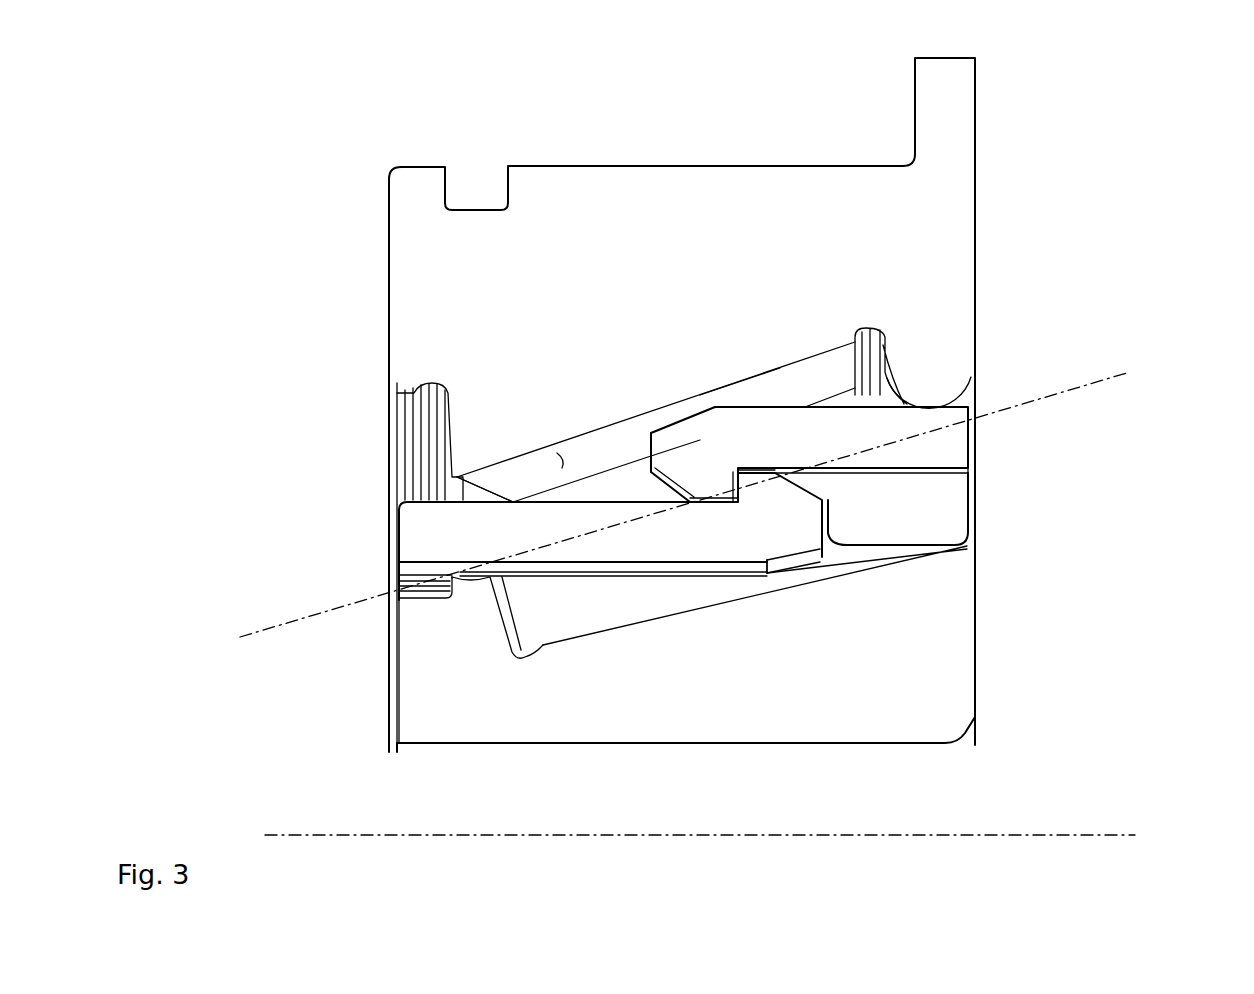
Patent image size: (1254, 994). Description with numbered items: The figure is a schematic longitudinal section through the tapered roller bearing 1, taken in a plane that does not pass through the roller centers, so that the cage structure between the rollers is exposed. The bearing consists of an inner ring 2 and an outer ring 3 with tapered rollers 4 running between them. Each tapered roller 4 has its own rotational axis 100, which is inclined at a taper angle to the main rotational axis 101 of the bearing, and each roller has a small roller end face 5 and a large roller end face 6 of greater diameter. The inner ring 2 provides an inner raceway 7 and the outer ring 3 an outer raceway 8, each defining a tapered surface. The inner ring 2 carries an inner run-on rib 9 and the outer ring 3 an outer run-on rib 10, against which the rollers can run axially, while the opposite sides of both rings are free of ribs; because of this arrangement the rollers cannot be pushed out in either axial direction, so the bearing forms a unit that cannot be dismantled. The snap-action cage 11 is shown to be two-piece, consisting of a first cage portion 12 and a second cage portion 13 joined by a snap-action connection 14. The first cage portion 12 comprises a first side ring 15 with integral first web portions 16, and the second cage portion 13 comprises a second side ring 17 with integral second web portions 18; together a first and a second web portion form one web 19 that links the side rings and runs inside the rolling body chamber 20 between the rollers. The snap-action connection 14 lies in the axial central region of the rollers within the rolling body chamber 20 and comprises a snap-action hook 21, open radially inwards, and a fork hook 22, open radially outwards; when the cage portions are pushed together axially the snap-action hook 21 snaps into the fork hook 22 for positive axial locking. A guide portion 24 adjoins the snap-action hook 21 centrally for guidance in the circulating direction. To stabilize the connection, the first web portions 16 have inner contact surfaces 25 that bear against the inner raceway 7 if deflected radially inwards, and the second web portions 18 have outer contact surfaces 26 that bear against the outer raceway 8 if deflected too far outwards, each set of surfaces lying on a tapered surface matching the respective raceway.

The tapered roller bearing 1 is at (223, 125).
The inner ring 2 is at (686, 676).
The outer ring 3 is at (682, 405).
The tapered roller 4 is at (509, 601).
The small roller end face 5 is at (510, 633).
The large roller end face 6 is at (885, 372).
The inner raceway 7 is at (613, 620).
The outer raceway 8 is at (557, 453).
The inner run-on rib 9 is at (447, 602).
The outer run-on rib 10 is at (929, 379).
The snap-action cage 11 is at (1047, 447).
The first cage portion 12 is at (398, 552).
The second cage portion 13 is at (966, 461).
The snap-action connection 14 is at (722, 366).
The first side ring 15 is at (583, 551).
The first web portions 16 is at (610, 553).
The second side ring 17 is at (853, 456).
The second web portions 18 is at (809, 454).
The web 19 is at (622, 392).
The rolling body chamber 20 is at (612, 452).
The snap-action hook 21 is at (728, 485).
The fork hook 22 is at (743, 487).
The guide portion 24 is at (812, 485).
The inner contact surfaces 25 is at (828, 585).
The outer contact surfaces 26 is at (676, 418).
The rotational axis 100 is at (1087, 390).
The main rotational axis 101 is at (1060, 834).